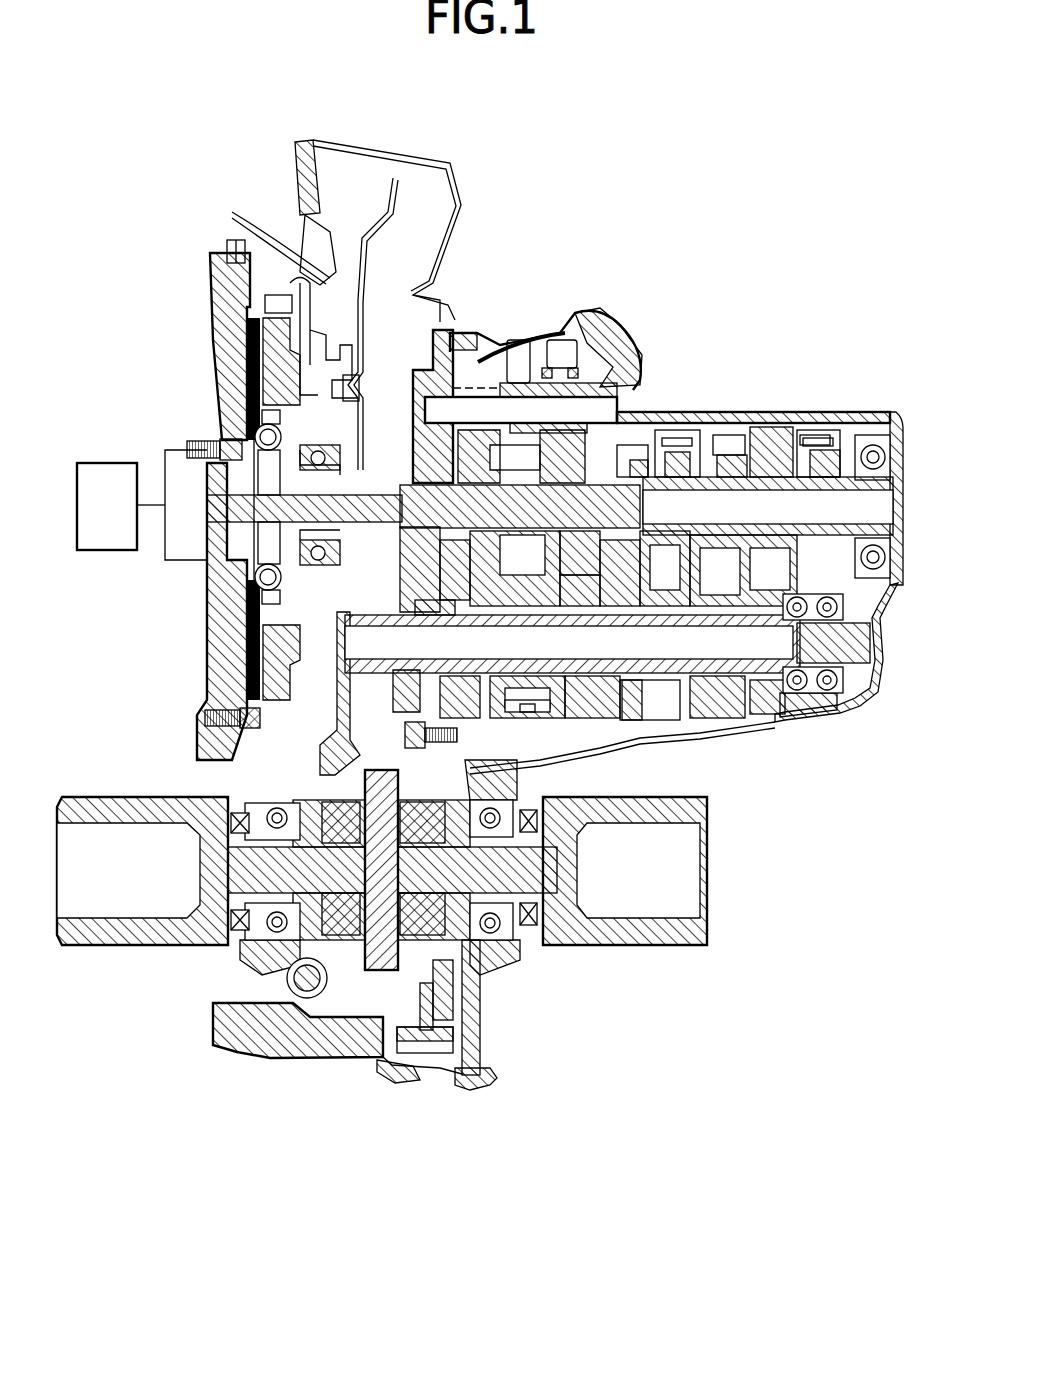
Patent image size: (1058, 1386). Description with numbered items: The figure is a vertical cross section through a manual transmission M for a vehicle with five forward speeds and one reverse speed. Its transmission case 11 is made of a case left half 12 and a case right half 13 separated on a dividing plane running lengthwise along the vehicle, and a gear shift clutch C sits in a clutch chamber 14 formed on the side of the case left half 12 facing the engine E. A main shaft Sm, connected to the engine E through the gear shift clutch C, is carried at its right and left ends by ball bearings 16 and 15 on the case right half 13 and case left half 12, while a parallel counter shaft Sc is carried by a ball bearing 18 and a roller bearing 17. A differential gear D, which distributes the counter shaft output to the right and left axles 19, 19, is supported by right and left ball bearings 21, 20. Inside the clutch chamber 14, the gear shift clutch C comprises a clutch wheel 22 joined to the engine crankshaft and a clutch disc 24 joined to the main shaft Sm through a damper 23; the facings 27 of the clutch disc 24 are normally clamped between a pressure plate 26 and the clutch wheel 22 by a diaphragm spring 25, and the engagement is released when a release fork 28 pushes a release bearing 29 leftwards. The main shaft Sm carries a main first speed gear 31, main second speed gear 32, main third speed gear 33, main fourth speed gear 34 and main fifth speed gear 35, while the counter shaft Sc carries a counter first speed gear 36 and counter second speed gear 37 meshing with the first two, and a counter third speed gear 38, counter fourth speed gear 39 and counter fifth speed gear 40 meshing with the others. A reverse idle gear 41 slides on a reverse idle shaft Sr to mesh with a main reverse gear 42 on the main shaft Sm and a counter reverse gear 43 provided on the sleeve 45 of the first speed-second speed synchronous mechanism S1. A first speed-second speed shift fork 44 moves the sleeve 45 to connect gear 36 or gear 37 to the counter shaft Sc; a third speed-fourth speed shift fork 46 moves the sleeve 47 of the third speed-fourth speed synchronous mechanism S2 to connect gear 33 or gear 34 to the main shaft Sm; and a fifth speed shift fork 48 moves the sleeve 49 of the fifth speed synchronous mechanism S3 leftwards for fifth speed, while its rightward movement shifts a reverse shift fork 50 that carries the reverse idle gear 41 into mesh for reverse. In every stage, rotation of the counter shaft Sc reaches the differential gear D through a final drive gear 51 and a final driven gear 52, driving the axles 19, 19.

The transmission case 11 is at (359, 1078).
The case left half 12 is at (402, 1070).
The case right half 13 is at (459, 1050).
The clutch chamber 14 is at (310, 316).
The ball bearing 15 is at (443, 566).
The ball bearing 16 is at (871, 438).
The roller bearing 17 is at (368, 688).
The ball bearing 18 is at (818, 706).
The axle 19 is at (150, 937).
The ball bearing 20 is at (264, 938).
The ball bearing 21 is at (493, 942).
The clutch wheel 22 is at (228, 682).
The damper 23 is at (256, 430).
The clutch disc 24 is at (247, 650).
The diaphragm spring 25 is at (304, 456).
The pressure plate 26 is at (273, 700).
The facings 27 is at (258, 340).
The release fork 28 is at (360, 300).
The release bearing 29 is at (313, 563).
The main first speed gear 31 is at (489, 479).
The main second speed gear 32 is at (613, 539).
The main third speed gear 33 is at (643, 445).
The main fourth speed gear 34 is at (733, 424).
The main fifth speed gear 35 is at (768, 422).
The counter first speed gear 36 is at (485, 742).
The counter second speed gear 37 is at (616, 736).
The counter third speed gear 38 is at (643, 718).
The counter fourth speed gear 39 is at (730, 722).
The counter fifth speed gear 40 is at (768, 716).
The reverse idle gear 41 is at (573, 352).
The main reverse gear 42 is at (593, 526).
The counter reverse gear 43 is at (506, 546).
The first speed-second speed shift fork 44 is at (596, 614).
The sleeve 45 is at (532, 712).
The third speed-fourth speed shift fork 46 is at (688, 594).
The sleeve 47 is at (663, 608).
The fifth speed shift fork 48 is at (836, 426).
The sleeve 49 is at (783, 447).
The reverse shift fork 50 is at (582, 378).
The final drive gear 51 is at (437, 627).
The final driven gear 52 is at (446, 1046).
The gear shift clutch C is at (210, 368).
The differential gear D is at (341, 770).
The engine E is at (97, 524).
The manual transmission M is at (636, 283).
The main shaft Sm is at (473, 523).
The counter shaft Sc is at (476, 663).
The reverse idle shaft Sr is at (636, 432).
The first speed-second speed synchronous mechanism S1 is at (553, 735).
The third speed-fourth speed synchronous mechanism S2 is at (705, 416).
The fifth speed synchronous mechanism S3 is at (801, 412).